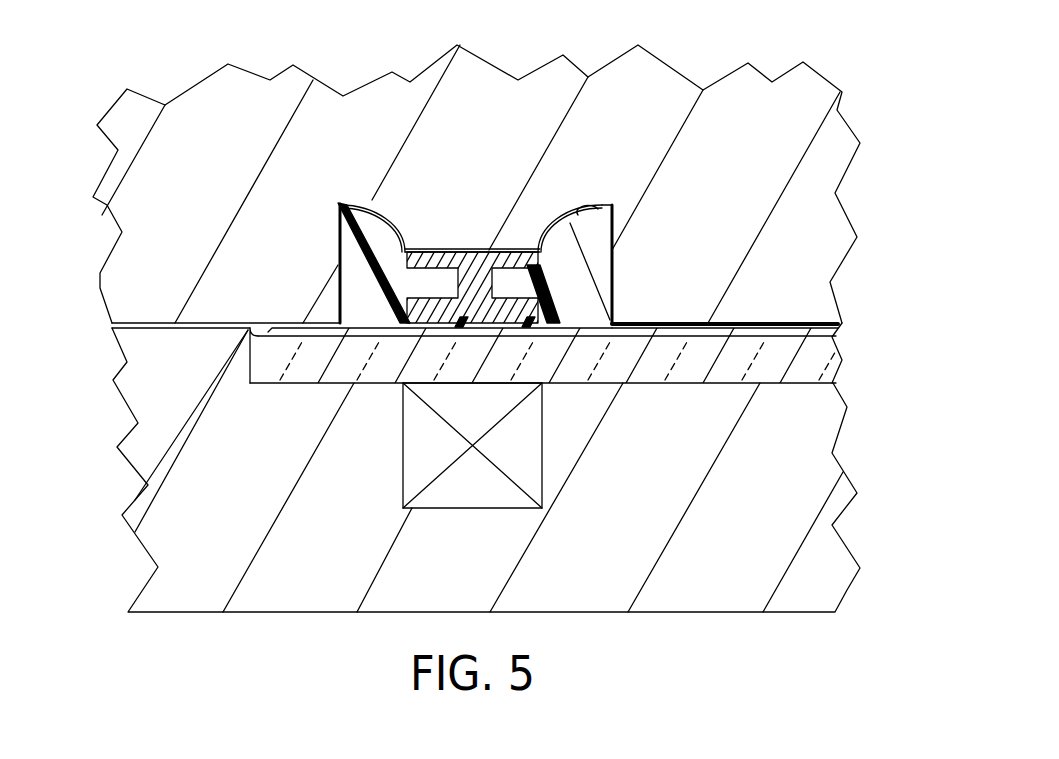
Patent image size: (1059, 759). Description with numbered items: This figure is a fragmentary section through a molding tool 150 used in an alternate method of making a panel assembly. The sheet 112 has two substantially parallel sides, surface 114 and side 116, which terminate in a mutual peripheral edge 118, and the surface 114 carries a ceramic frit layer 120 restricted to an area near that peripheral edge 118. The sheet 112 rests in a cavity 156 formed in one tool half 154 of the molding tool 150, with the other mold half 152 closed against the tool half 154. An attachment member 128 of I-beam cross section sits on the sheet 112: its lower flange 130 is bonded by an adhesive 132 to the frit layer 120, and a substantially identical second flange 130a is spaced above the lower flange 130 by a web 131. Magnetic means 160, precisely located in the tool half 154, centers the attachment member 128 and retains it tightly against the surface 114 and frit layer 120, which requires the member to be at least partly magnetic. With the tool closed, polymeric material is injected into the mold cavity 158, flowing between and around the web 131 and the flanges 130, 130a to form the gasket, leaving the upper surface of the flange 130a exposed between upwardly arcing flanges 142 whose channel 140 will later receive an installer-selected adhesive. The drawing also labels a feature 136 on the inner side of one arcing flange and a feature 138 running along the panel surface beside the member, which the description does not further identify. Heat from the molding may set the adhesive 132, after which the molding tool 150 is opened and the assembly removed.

The molding tool 150 is at (662, 56).
The mold half 152 is at (770, 151).
The tool half 154 is at (750, 571).
The cavity 156 is at (248, 333).
The mold cavity 158 is at (601, 204).
The upwardly arcing flanges 142 is at (338, 220).
The channel 140 is at (505, 252).
The contact portion 136 is at (548, 287).
The conductive trace 138 is at (630, 323).
The ceramic frit layer 120 is at (725, 330).
The surface 114 is at (790, 332).
The sheet 112 is at (808, 372).
The side 116 is at (680, 383).
The peripheral edge 118 is at (253, 383).
The magnetic means 160 is at (505, 503).
The adhesive 132 is at (475, 328).
The attachment member 128 is at (490, 240).
The lower flange 130 is at (427, 307).
The second flange 130a is at (450, 260).
The web 131 is at (478, 278).